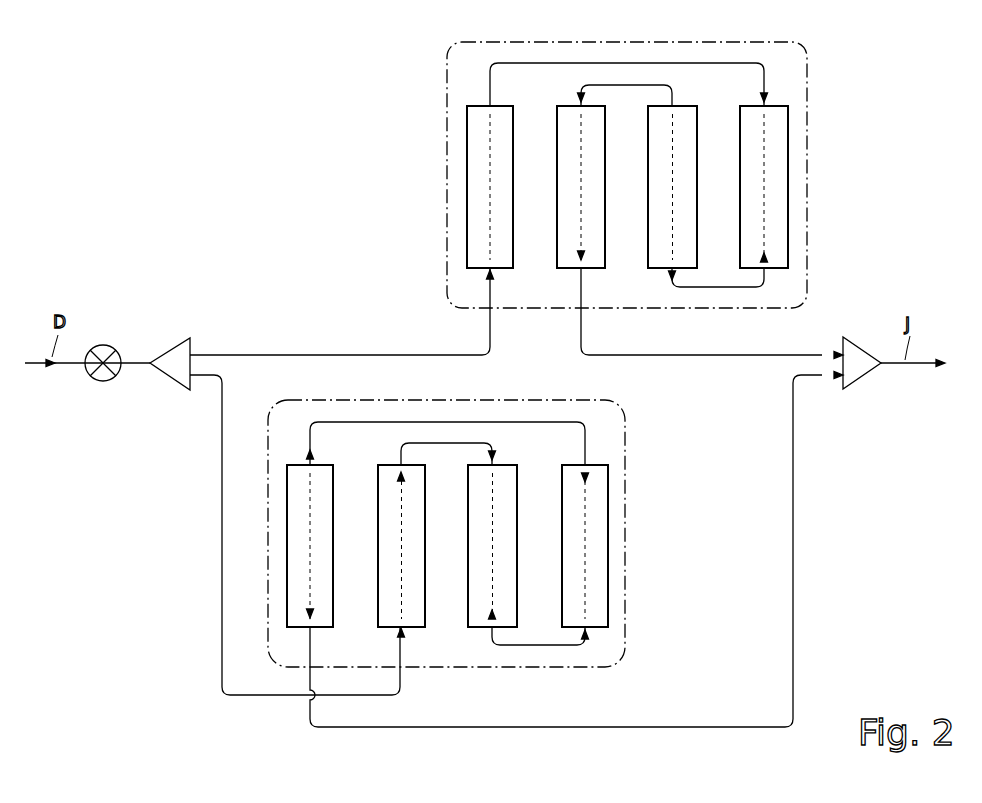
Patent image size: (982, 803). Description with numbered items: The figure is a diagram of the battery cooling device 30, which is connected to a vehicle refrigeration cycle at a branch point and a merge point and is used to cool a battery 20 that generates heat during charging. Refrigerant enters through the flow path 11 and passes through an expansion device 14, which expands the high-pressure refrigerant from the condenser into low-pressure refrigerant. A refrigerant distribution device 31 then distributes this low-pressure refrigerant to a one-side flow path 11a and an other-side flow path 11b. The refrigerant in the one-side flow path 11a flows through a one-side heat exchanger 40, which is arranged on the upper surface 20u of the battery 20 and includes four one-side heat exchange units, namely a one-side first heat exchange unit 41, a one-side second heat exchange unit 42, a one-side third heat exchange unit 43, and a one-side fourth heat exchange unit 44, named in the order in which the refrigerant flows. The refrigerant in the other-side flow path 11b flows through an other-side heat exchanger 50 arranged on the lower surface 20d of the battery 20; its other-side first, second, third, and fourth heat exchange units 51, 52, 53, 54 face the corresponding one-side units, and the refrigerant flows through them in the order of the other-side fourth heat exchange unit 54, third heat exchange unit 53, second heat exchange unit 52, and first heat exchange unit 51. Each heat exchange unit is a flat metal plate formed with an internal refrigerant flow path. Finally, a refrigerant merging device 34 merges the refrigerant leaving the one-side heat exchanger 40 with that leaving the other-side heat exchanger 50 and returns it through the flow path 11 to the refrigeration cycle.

The battery cooling device 30 is at (103, 118).
The refrigerant flow path 11 is at (42, 366).
The one-side flow path 11a is at (222, 352).
The other-side flow path 11b is at (222, 522).
The expansion device 14 is at (103, 382).
The refrigerant distribution device 31 is at (176, 343).
The refrigerant merging device 34 is at (848, 390).
The battery 20 is at (668, 175).
The upper surface 20u is at (788, 78).
The lower surface 20d is at (598, 652).
The one-side heat exchanger 40 is at (780, 383).
The one-side first heat exchange unit 41 is at (500, 272).
The one-side second heat exchange unit 42 is at (774, 272).
The one-side third heat exchange unit 43 is at (690, 272).
The one-side fourth heat exchange unit 44 is at (590, 272).
The other-side heat exchanger 50 is at (435, 306).
The other-side first heat exchange unit 51 is at (300, 465).
The other-side second heat exchange unit 52 is at (572, 465).
The other-side third heat exchange unit 53 is at (480, 465).
The other-side fourth heat exchange unit 54 is at (390, 465).